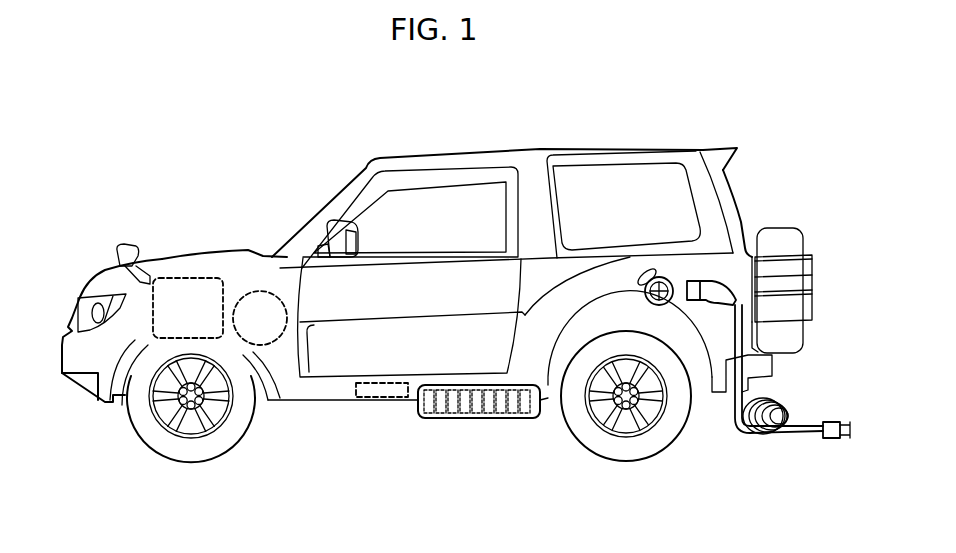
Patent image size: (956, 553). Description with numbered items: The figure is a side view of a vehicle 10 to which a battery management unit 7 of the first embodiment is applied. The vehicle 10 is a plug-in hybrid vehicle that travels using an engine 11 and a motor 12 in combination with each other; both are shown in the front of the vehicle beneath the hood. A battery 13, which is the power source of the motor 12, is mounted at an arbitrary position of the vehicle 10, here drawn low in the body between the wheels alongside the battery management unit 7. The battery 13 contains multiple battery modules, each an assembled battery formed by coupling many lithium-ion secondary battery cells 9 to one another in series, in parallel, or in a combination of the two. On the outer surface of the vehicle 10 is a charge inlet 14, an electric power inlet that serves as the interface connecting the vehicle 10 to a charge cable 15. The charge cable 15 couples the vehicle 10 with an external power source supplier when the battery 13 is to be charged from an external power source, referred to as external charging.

The vehicle 10 is at (165, 143).
The engine 11 is at (175, 278).
The motor 12 is at (242, 291).
The battery management unit 7 is at (378, 398).
The battery cells 9 is at (450, 419).
The battery 13 is at (501, 419).
The charge inlet 14 is at (664, 278).
The charge cable 15 is at (796, 402).